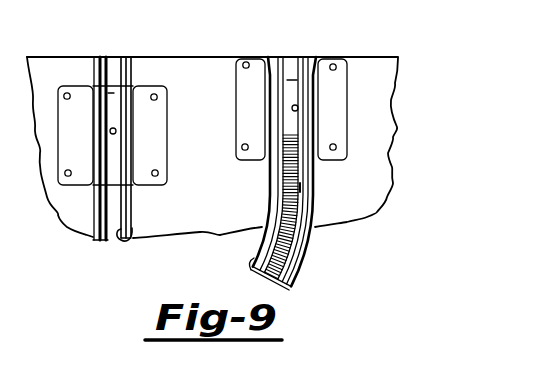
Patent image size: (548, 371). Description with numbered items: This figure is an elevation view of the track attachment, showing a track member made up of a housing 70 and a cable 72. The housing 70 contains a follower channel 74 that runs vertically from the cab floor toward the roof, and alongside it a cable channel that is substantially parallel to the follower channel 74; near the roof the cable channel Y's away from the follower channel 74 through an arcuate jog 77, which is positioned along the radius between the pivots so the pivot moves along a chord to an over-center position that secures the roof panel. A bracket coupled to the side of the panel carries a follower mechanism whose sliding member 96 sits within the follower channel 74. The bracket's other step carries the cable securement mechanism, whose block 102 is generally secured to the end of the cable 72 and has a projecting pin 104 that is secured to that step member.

The sliding member 96 is at (110, 94).
The housing 70 is at (134, 222).
The follower channel 74 is at (121, 240).
The block 102 is at (292, 80).
The projecting pin 104 is at (298, 108).
The arcuate jog 77 is at (302, 190).
The cable 72 is at (280, 285).